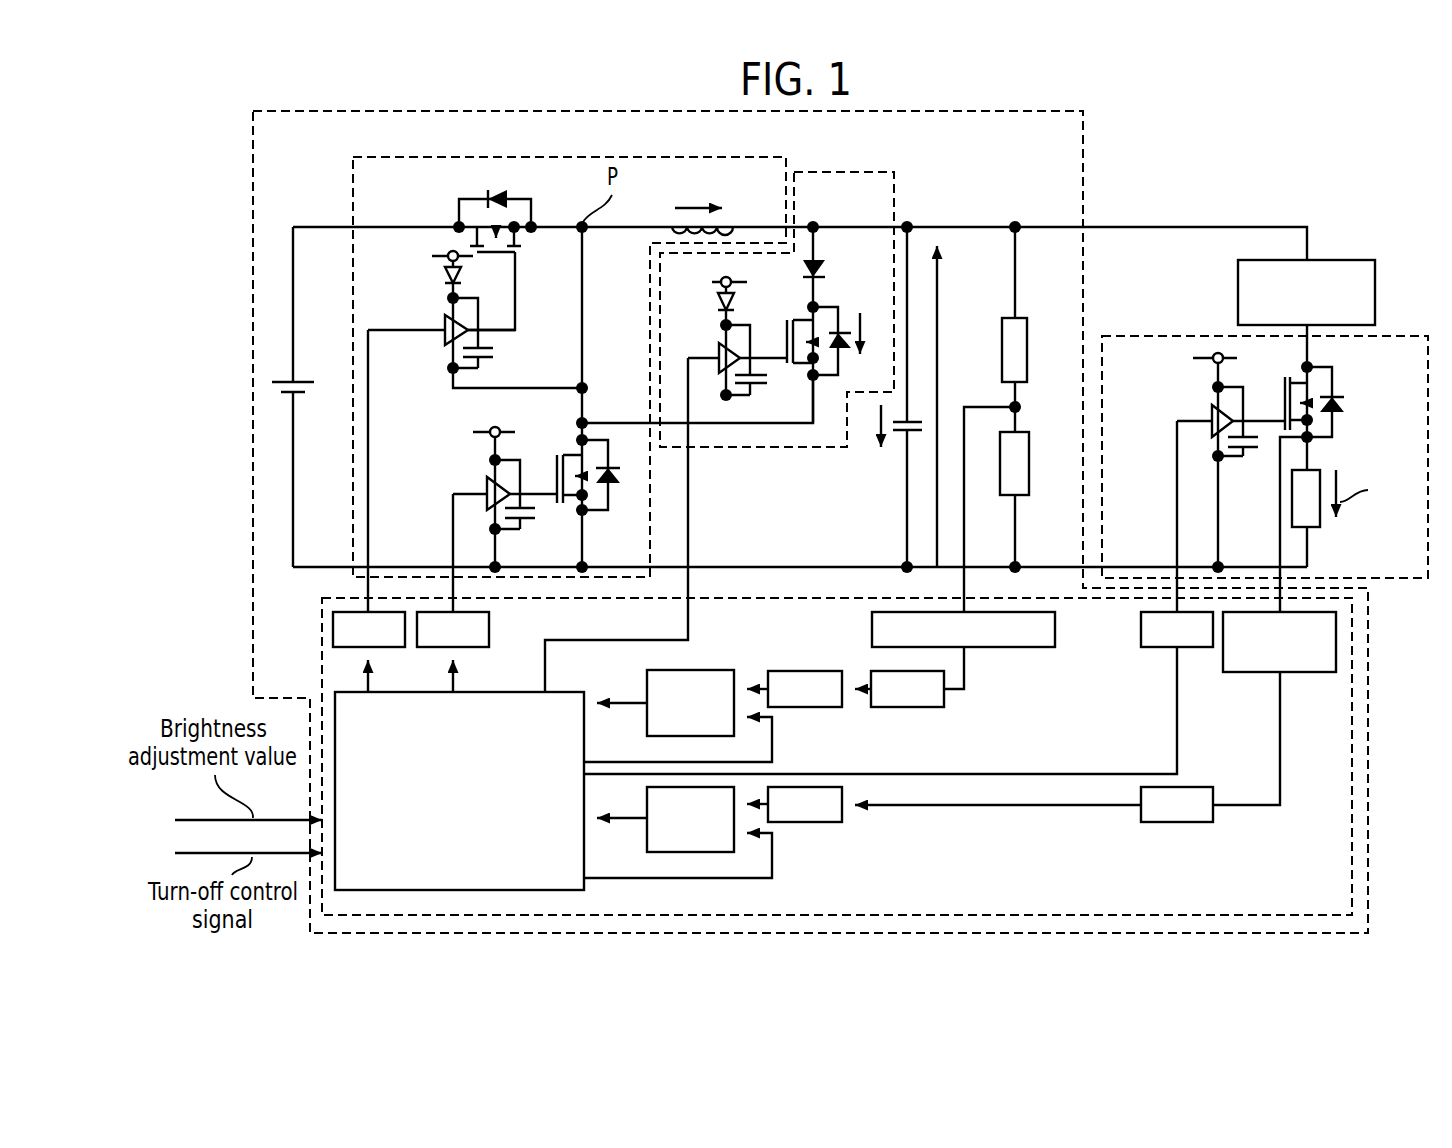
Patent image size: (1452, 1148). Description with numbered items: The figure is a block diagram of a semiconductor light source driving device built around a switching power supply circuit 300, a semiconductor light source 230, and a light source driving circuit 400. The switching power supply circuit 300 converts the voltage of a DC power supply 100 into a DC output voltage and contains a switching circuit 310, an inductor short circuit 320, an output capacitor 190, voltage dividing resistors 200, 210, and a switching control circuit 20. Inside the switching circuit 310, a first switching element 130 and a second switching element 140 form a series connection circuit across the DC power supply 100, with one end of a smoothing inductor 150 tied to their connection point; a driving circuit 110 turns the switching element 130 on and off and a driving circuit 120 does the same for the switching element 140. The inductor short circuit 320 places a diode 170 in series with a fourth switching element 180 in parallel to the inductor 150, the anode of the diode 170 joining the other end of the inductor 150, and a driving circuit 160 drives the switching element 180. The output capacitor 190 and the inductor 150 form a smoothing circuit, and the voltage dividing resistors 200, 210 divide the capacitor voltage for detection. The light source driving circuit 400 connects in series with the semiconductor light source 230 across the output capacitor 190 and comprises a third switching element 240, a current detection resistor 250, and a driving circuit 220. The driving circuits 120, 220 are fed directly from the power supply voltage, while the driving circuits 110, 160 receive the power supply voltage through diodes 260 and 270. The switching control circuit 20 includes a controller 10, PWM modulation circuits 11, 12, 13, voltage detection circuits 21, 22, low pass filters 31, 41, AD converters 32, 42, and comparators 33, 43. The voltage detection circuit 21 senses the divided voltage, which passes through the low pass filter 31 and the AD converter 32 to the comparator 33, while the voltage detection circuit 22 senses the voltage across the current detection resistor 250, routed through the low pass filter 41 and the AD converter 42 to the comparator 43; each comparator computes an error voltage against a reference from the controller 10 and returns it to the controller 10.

The controller 10 is at (333, 707).
The pulse width modulation circuit 11 is at (333, 625).
The pulse width modulation circuit 12 is at (489, 630).
The pulse width modulation circuit 13 is at (1141, 633).
The switching control circuit 20 is at (1210, 915).
The voltage detection circuit 21 is at (985, 648).
The voltage detection circuit 22 is at (1336, 630).
The low pass filter 31 is at (912, 708).
The AD converter 32 is at (827, 708).
The comparator 33 is at (647, 717).
The low pass filter 41 is at (1213, 797).
The AD converter 42 is at (827, 822).
The comparator 43 is at (647, 837).
The DC power supply 100 is at (295, 378).
The driving circuit 110 is at (445, 340).
The driving circuit 120 is at (487, 488).
The switching element 130 is at (532, 210).
The switching element 140 is at (585, 428).
The inductor 150 is at (733, 227).
The driving circuit 160 is at (738, 322).
The diode 170 is at (820, 258).
The switching element 180 is at (827, 303).
The output capacitor 190 is at (902, 442).
The voltage dividing resistor 200 is at (1025, 318).
The voltage dividing resistor 210 is at (1017, 432).
The driving circuit 220 is at (1212, 412).
The semiconductor light source 230 is at (1375, 298).
The switching element 240 is at (1335, 380).
The current detection resistor 250 is at (1323, 470).
The diode 260 is at (440, 282).
The diode 270 is at (715, 308).
The switching power supply circuit 300 is at (1083, 148).
The switching circuit 310 is at (353, 157).
The inductor short circuit 320 is at (910, 148).
The light source driving circuit 400 is at (1135, 336).